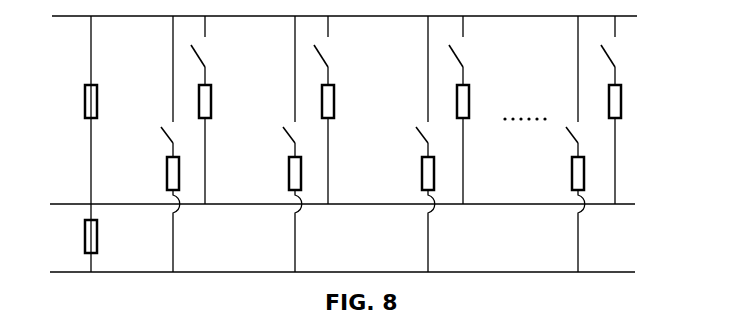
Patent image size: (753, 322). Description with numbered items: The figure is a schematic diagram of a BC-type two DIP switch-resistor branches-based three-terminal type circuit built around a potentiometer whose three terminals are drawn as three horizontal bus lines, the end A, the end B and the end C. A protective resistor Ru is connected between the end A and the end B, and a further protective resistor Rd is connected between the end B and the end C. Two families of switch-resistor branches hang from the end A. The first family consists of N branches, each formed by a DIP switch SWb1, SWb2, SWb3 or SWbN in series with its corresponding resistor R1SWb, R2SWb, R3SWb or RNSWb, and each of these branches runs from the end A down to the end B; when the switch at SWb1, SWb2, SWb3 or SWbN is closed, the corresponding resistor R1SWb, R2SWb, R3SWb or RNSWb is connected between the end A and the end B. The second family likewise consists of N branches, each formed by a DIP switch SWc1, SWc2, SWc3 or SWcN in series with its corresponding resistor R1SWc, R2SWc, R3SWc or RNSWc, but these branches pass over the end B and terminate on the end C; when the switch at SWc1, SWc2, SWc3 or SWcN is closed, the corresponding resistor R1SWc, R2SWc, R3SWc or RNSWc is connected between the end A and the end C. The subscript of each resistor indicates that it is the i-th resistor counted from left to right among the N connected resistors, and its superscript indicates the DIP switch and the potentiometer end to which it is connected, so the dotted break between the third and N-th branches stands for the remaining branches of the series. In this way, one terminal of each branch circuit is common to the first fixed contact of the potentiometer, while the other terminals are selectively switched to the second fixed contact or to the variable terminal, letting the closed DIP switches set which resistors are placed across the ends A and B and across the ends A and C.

The end A of the potentiometer A is at (334, 20).
The end B of the potentiometer B is at (333, 187).
The end C of the potentiometer C is at (333, 261).
The protective resistor Ru is at (74, 110).
The protective resistor Rd is at (74, 238).
The DIP switch SWb1 is at (233, 50).
The DIP switch SWb2 is at (356, 50).
The DIP switch SWb3 is at (492, 50).
The DIP switch SWbN is at (644, 50).
The resistor R1SWb is at (238, 144).
The resistor R2SWb is at (361, 144).
The resistor R3SWb is at (497, 144).
The resistor RNSWb is at (648, 144).
The DIP switch SWc1 is at (141, 86).
The DIP switch SWc2 is at (264, 86).
The DIP switch SWc3 is at (394, 86).
The DIP switch SWcN is at (544, 86).
The resistor R1SWc is at (141, 214).
The resistor R2SWc is at (263, 214).
The resistor R3SWc is at (396, 214).
The resistor RNSWc is at (545, 214).